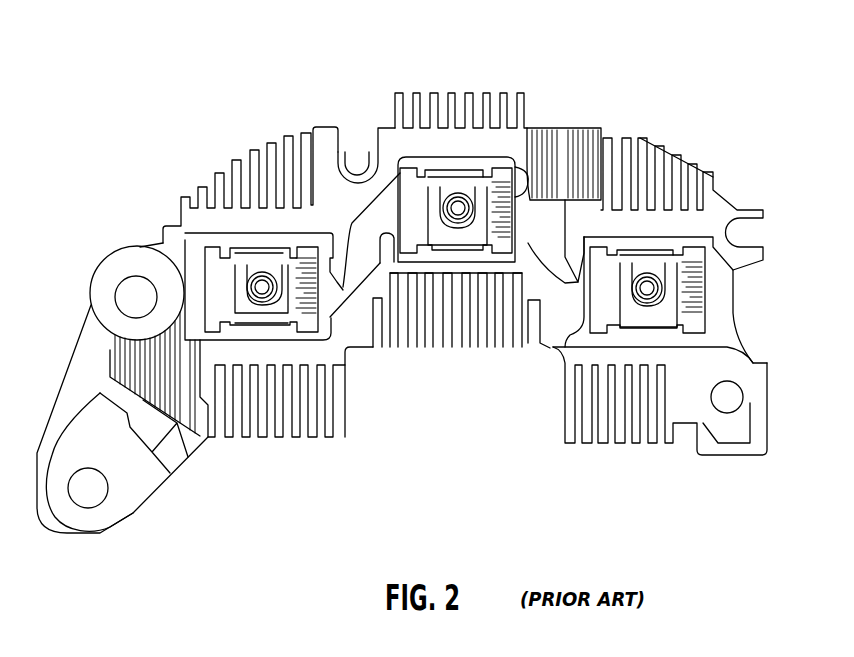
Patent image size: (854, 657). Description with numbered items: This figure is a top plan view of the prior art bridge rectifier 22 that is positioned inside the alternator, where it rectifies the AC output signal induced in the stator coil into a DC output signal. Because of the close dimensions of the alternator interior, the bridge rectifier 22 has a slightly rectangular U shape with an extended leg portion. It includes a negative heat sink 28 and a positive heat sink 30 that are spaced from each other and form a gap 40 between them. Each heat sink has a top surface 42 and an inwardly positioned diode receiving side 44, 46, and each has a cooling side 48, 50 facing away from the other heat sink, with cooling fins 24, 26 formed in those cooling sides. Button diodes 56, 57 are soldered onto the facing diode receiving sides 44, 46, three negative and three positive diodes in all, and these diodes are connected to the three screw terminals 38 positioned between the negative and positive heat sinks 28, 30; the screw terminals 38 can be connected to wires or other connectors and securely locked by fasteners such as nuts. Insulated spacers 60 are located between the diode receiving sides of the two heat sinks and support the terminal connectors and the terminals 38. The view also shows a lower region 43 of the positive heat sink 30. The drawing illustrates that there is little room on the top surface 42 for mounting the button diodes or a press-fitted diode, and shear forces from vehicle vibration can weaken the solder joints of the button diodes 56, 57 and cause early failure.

The bridge rectifier 22 is at (560, 88).
The cooling fins 24 is at (640, 136).
The cooling fins 26 is at (617, 445).
The negative heat sink 28 is at (567, 152).
The positive heat sink 30 is at (211, 460).
The screw terminals 38 is at (455, 207).
The gap 40 is at (349, 300).
The top surface 42 is at (580, 225).
The lower heat sink portion 43 is at (567, 322).
The diode receiving side 44 is at (551, 128).
The diode receiving side 46 is at (537, 303).
The cooling side 48 is at (379, 117).
The cooling side 50 is at (340, 450).
The button diode 56 is at (259, 272).
The button diode 57 is at (263, 333).
The insulated spacers 60 is at (203, 257).